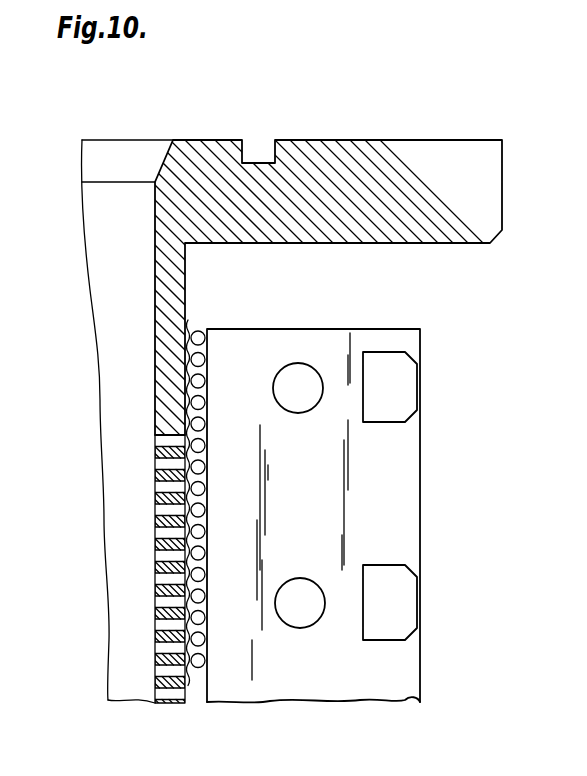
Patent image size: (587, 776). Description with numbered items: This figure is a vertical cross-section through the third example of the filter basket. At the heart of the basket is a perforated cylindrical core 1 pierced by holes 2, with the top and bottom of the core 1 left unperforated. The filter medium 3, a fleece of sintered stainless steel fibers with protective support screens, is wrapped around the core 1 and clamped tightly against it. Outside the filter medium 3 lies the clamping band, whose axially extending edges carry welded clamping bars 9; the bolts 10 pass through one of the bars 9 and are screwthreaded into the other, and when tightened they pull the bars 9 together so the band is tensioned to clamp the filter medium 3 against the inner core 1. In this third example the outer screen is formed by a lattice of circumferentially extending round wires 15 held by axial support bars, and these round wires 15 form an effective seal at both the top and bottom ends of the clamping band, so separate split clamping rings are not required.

The perforated cylindrical core 1 is at (165, 372).
The holes 2 is at (155, 441).
The filter medium 3 is at (188, 327).
The clamping bars 9 is at (387, 455).
The bolts 10 is at (305, 620).
The circumferentially extending round wires 15 is at (192, 505).